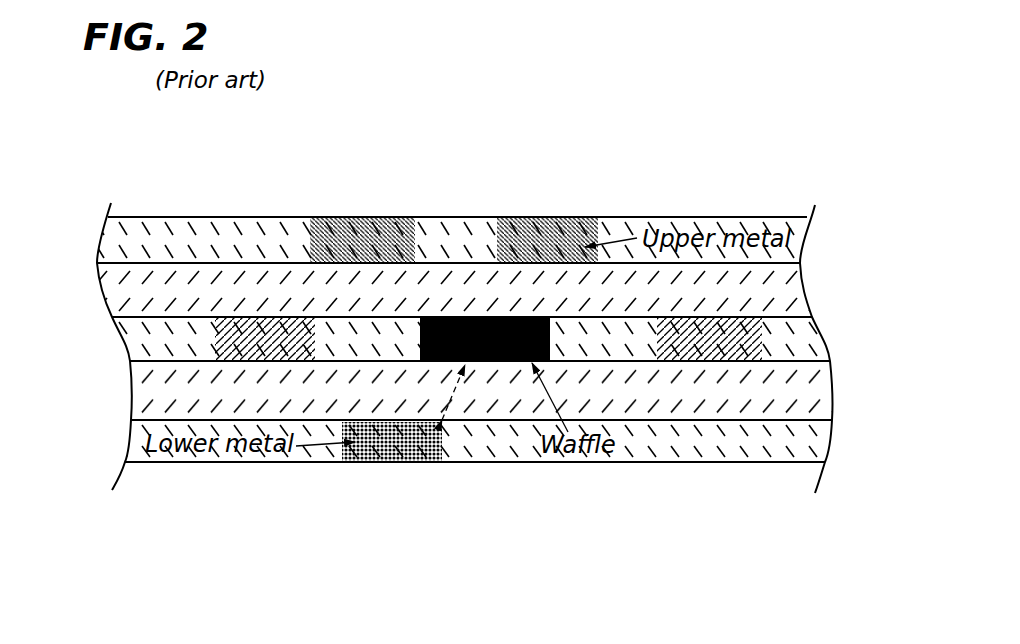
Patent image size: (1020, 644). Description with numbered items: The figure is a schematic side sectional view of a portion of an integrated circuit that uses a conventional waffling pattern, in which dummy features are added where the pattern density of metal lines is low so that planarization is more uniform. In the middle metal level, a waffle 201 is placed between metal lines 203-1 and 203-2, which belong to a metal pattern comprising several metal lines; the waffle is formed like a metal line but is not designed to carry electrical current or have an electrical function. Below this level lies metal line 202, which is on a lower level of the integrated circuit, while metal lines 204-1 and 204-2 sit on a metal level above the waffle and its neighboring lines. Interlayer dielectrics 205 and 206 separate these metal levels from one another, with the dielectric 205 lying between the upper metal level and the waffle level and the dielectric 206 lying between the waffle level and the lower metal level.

The waffle 201 is at (490, 362).
The metal line 202 is at (392, 440).
The metal line 203-1 is at (250, 345).
The metal line 203-2 is at (757, 343).
The metal line 204-1 is at (362, 242).
The metal line 204-2 is at (547, 242).
The interlayer dielectric 205 is at (787, 295).
The interlayer dielectric 206 is at (810, 410).